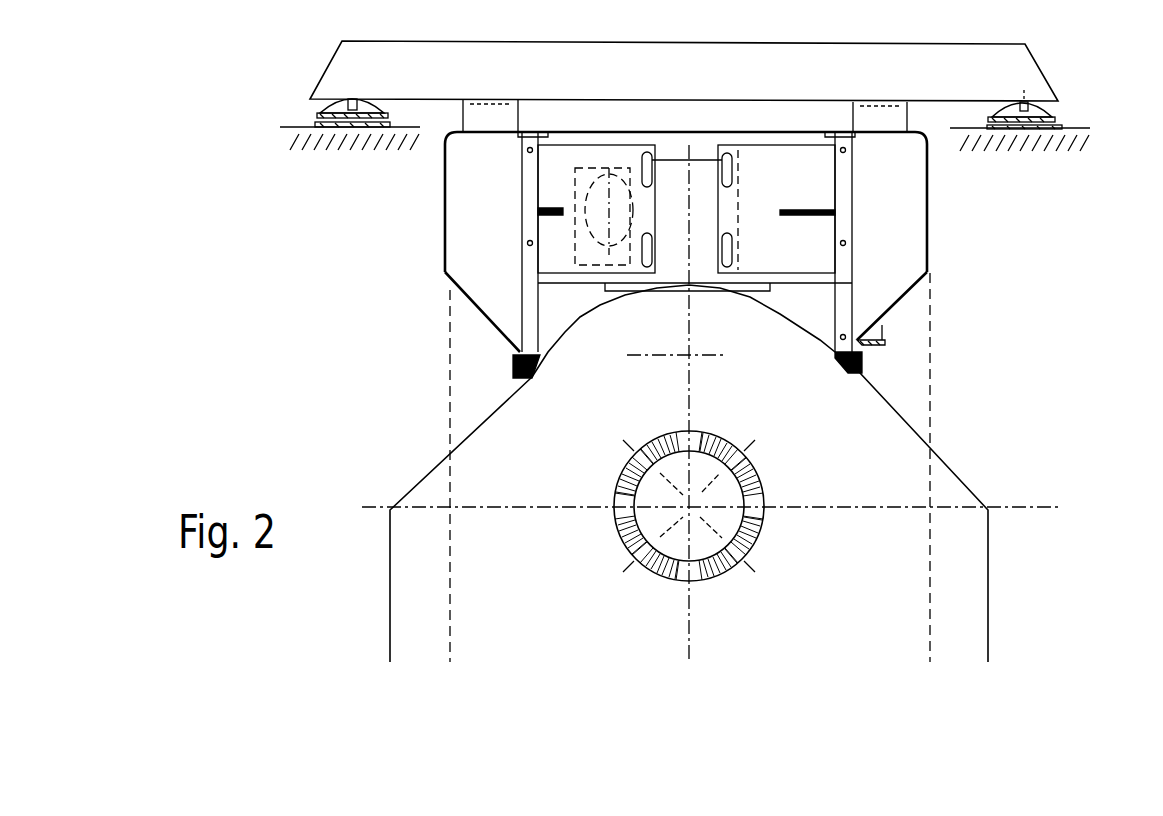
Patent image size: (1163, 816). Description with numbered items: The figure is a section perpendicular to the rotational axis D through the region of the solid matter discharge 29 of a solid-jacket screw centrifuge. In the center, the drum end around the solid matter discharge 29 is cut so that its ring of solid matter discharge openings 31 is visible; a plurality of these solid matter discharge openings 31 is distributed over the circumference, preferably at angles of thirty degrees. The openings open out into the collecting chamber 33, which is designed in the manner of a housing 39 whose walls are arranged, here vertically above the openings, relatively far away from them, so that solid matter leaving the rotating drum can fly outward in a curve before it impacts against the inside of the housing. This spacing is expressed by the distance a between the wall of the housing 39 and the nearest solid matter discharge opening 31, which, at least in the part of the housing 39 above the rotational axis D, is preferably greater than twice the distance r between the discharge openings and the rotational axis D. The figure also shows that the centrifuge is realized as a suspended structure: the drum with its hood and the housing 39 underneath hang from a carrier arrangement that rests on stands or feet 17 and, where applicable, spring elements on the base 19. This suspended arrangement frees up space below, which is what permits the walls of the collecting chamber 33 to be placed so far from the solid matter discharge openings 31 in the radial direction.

The feet 17 is at (317, 115).
The base 19 is at (385, 135).
The solid matter discharge 29 is at (727, 568).
The solid matter discharge openings 31 is at (730, 553).
The collecting chamber 33 is at (878, 427).
The housing 39 is at (882, 387).
The distance a is at (805, 330).
The distance between discharge openings and rotational axis r is at (689, 435).
The rotational axis D is at (686, 512).